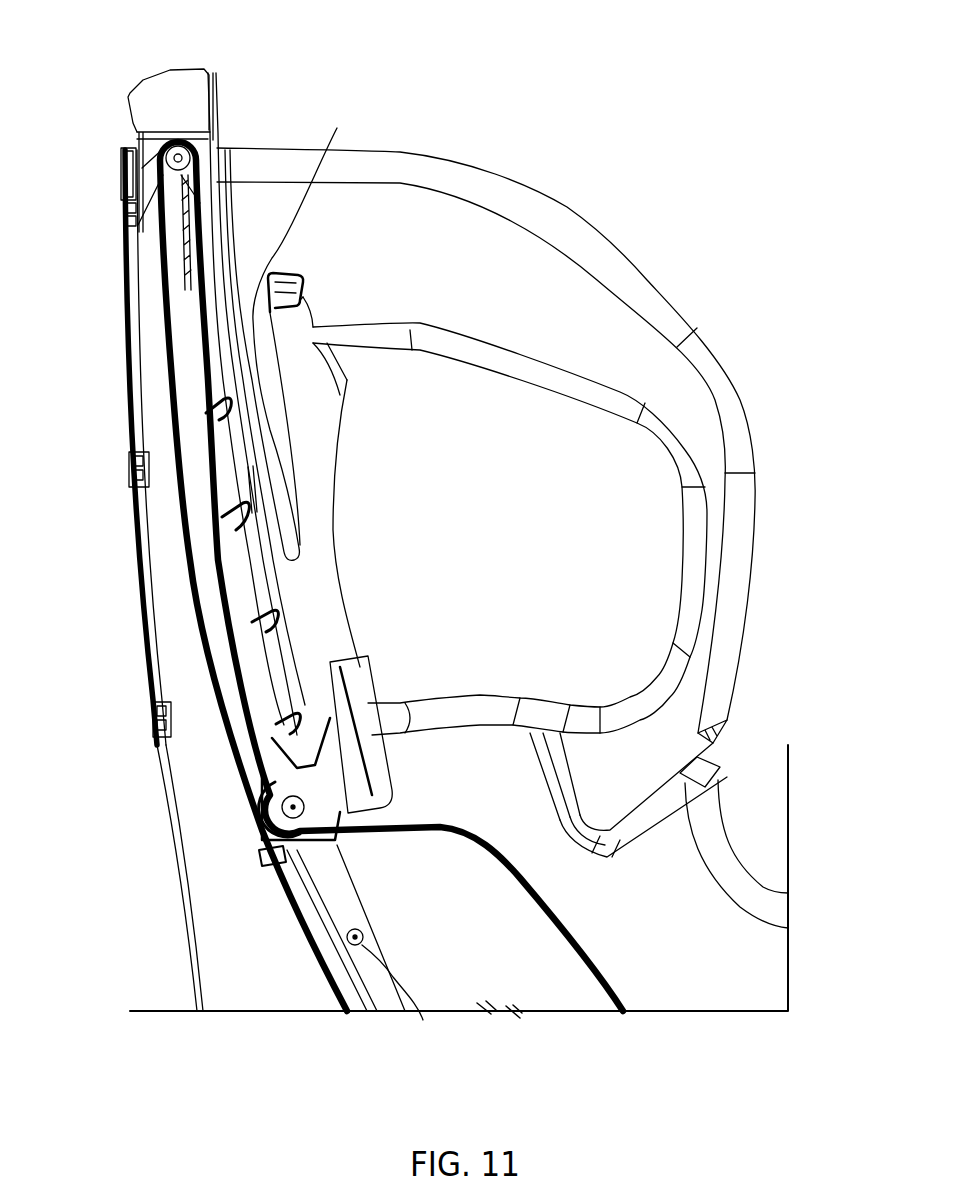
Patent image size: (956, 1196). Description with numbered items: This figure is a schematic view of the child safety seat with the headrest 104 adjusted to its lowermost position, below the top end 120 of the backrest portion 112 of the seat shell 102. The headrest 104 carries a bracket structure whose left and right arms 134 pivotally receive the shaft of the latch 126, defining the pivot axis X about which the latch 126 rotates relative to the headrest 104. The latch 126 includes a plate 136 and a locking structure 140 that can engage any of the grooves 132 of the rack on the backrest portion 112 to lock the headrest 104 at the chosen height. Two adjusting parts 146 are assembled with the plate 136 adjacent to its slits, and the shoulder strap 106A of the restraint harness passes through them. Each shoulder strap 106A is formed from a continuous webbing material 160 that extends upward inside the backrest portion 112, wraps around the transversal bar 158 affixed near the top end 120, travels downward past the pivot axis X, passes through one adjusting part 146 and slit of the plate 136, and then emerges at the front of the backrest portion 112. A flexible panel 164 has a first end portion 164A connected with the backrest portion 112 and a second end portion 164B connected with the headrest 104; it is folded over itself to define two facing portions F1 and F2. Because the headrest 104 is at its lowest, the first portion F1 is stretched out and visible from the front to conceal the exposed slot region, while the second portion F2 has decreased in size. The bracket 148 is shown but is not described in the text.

The seat shell 102 is at (716, 1004).
The headrest 104 is at (520, 372).
The shoulder strap 106A is at (597, 960).
The backrest portion 112 is at (108, 320).
The top end 120 is at (171, 90).
The latch 126 is at (300, 937).
The grooves 132 is at (216, 517).
The arms 134 is at (287, 738).
The plate 136 is at (325, 887).
The locking structure 140 is at (395, 990).
The adjusting parts 146 is at (262, 850).
The mounting brackets 148 is at (302, 288).
The bar 158 is at (118, 163).
The webbing material 160 is at (190, 572).
The panel 164 is at (286, 383).
The first end portion 164A is at (221, 170).
The second end portion 164B is at (258, 248).
The first portion F1 is at (250, 228).
The second portion F2 is at (300, 443).
The pivot axis X is at (280, 793).